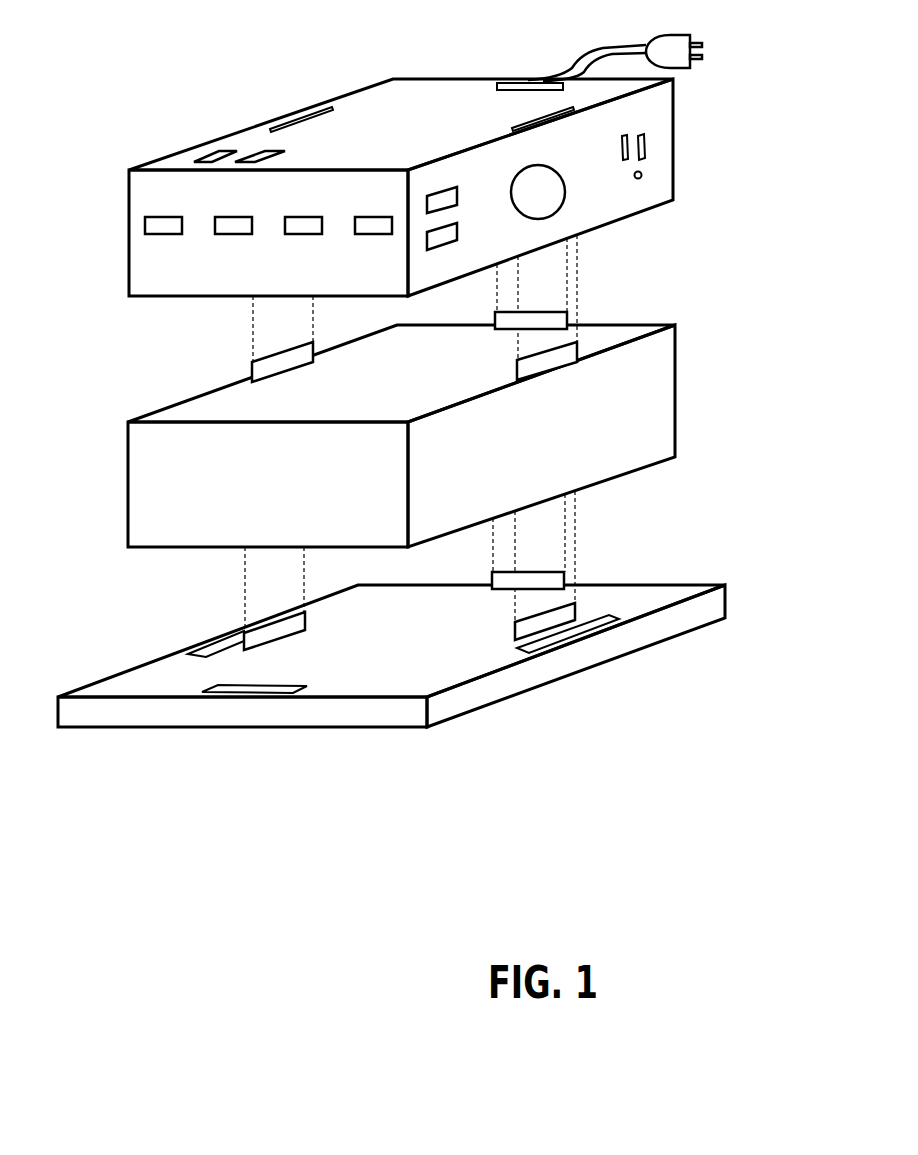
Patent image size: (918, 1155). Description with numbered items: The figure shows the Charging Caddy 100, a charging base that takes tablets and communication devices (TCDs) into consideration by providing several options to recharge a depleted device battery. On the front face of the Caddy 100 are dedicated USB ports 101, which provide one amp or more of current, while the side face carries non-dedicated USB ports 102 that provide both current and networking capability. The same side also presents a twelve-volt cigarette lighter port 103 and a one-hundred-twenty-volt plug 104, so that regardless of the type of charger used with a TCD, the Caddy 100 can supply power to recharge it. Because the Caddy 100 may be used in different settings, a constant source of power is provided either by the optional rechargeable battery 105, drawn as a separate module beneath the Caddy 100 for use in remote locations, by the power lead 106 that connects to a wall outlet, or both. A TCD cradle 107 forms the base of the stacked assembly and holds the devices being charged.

The Charging Caddy 100 is at (342, 133).
The dedicated USB ports 101 is at (370, 213).
The non-dedicated USB ports 102 is at (265, 147).
The cigarette lighter port 103 is at (573, 192).
The 120 v plug 104 is at (655, 147).
The rechargeable battery 105 is at (547, 434).
The power lead 106 is at (705, 52).
The TCD cradle 107 is at (655, 628).